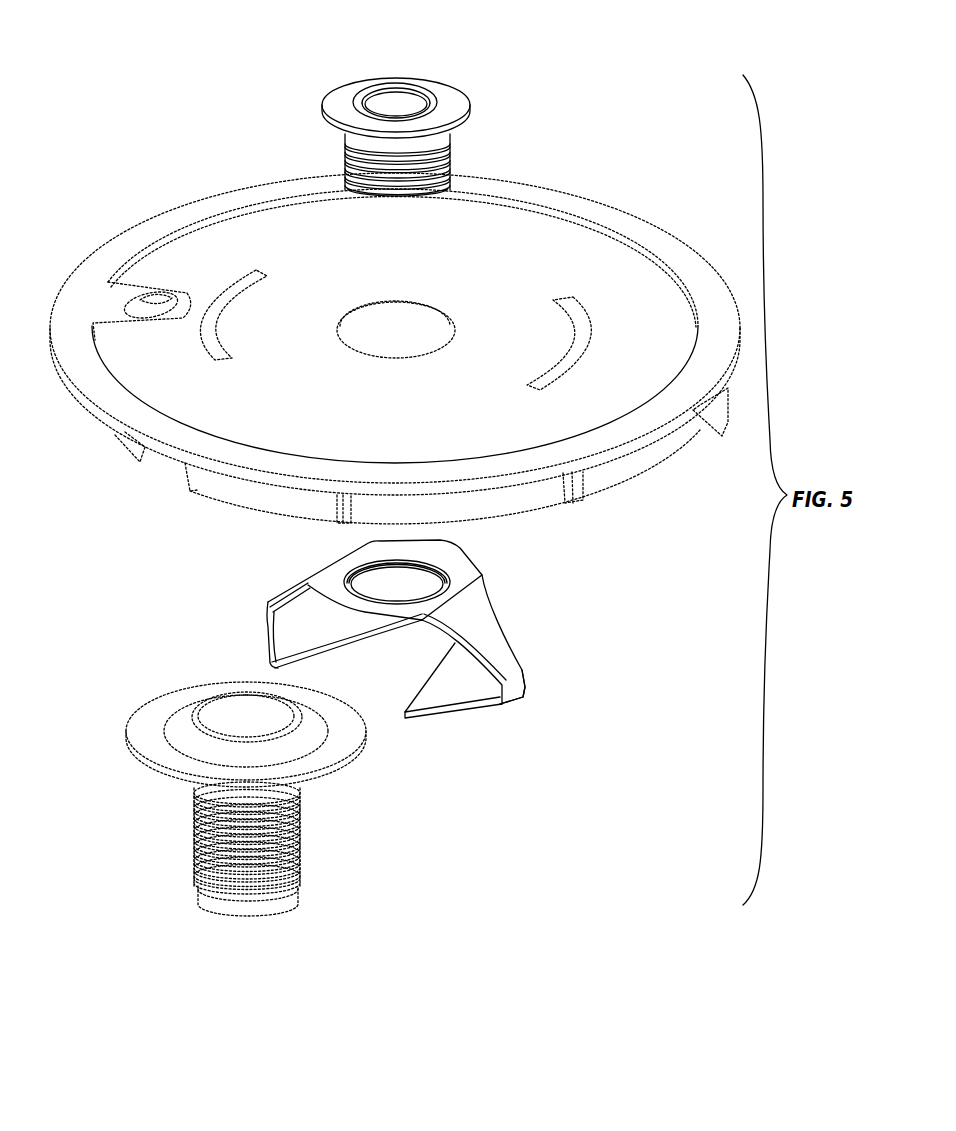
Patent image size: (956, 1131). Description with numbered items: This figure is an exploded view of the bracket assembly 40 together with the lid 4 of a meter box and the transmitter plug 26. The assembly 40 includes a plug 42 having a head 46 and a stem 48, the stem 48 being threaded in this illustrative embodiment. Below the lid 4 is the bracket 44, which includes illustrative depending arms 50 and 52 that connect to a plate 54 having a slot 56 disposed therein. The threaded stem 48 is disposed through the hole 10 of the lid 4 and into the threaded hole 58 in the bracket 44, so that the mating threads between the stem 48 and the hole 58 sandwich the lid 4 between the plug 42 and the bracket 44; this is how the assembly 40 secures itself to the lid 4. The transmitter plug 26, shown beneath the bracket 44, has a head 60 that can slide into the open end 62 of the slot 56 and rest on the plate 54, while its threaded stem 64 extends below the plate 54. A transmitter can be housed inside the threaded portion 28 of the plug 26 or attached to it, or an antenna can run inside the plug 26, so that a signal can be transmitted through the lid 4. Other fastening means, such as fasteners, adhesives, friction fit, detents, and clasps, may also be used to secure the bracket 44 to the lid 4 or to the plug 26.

The bracket assembly 40 is at (127, 55).
The lid 4 is at (700, 270).
The hole 10 is at (383, 318).
The plug 42 is at (452, 86).
The head 46 is at (342, 86).
The stem 48 is at (452, 161).
The bracket 44 is at (492, 613).
The threaded hole 58 is at (402, 588).
The depending arm 50 is at (291, 593).
The depending arm 52 is at (500, 650).
The plate 54 is at (451, 698).
The slot 56 is at (331, 678).
The open end 62 is at (385, 708).
The transmitter plug 26 is at (368, 764).
The head 60 is at (151, 777).
The threaded stem 64 is at (300, 822).
The threaded portion 28 is at (206, 902).